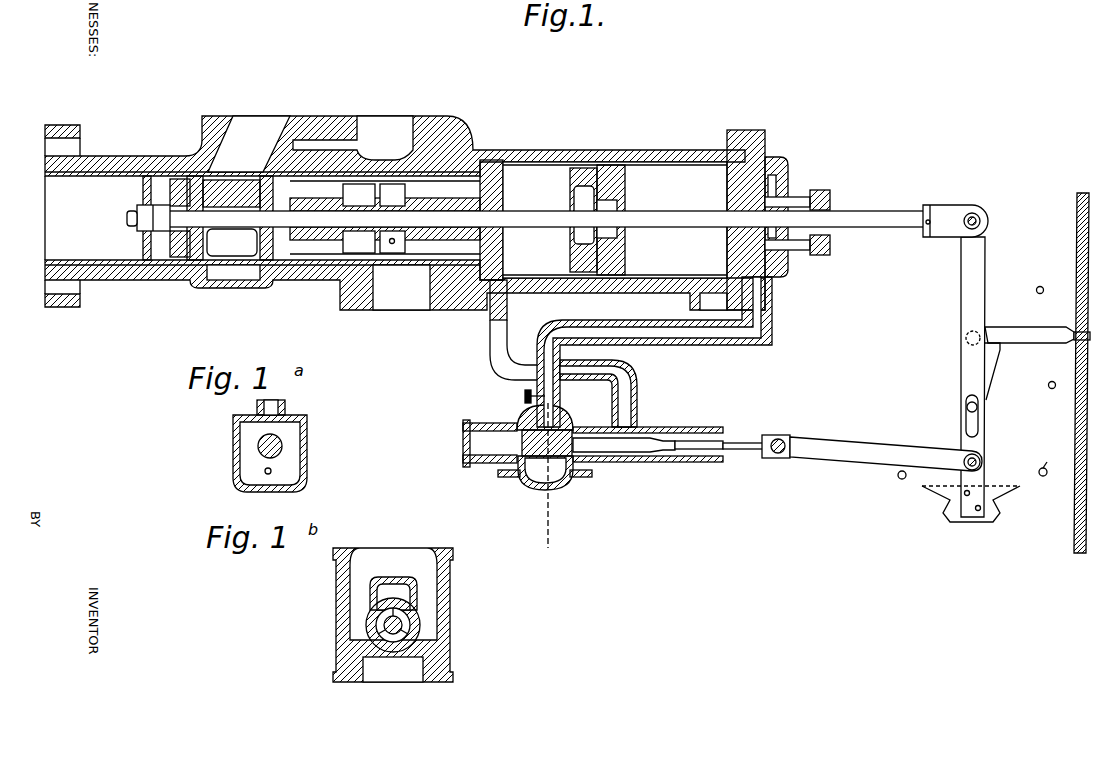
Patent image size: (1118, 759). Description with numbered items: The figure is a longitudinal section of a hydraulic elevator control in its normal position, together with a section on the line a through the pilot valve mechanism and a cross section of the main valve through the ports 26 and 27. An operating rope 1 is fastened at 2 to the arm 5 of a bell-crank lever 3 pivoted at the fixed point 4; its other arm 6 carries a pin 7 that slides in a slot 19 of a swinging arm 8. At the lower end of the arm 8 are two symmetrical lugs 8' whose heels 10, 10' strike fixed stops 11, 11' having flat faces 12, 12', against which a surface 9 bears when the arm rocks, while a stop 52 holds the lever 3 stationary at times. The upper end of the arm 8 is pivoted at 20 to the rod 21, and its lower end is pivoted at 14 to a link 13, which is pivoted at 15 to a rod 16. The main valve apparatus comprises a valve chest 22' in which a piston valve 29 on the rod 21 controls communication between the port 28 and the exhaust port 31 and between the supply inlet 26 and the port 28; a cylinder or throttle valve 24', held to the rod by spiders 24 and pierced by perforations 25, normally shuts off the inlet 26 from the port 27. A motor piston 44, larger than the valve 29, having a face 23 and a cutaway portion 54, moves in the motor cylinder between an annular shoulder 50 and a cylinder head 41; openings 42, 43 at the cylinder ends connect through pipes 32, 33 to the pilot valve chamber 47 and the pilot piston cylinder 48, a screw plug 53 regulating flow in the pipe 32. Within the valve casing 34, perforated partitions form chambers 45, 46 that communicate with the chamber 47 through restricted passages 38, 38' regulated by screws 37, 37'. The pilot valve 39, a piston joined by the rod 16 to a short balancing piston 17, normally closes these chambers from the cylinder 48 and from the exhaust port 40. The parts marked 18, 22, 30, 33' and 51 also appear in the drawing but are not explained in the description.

In FIG. 1, the rope or cable 1 is at (1086, 288).
In FIG. 1, the fastening point 2 is at (1090, 336).
In FIG. 1, the bell-crank lever 3 is at (995, 328).
In FIG. 1, the fixed pivot point 4 is at (966, 339).
In FIG. 1, the arm of bell-crank lever 5 is at (1060, 338).
In FIG. 1, the arm of bell-crank lever 6 is at (990, 368).
In FIG. 1, the pin 7 is at (977, 407).
In FIG. 1, the swinging arm 8 is at (986, 377).
In FIG. 1, the lug 8' is at (991, 497).
In FIG. 1, the surface 9 is at (1004, 487).
In FIG. 1, the heel 10 is at (983, 506).
In FIG. 1, the heel 10' is at (923, 526).
In FIG. 1, the fixed stop 11 is at (1046, 459).
In FIG. 1, the fixed stop 11' is at (877, 482).
In FIG. 1, the flat face 12 is at (1050, 489).
In FIG. 1, the flat face 12' is at (892, 495).
In FIG. 1, the link 13 is at (860, 450).
In FIG. 1, the pivot 14 is at (981, 462).
In FIG. 1, the pivot 15 is at (779, 436).
In FIG. 1, the rod 16 is at (605, 452).
In FIG. 1, the balancing piston 17 is at (662, 452).
In FIG. 1, the spindle 18 is at (703, 463).
In FIG. 1, the slot 19 is at (965, 424).
In FIG. 1, the pivot 20 is at (986, 221).
In FIG. 1, the rod or valve stem 21 is at (878, 216).
In FIG. 1B, the rod or valve stem 21 is at (406, 615).
In FIG. 1, the cylinder body 22 is at (395, 146).
In FIG. 1, the valve chest 22' is at (405, 287).
In FIG. 1B, the valve chest 22' is at (417, 615).
In FIG. 1, the right-hand face of motor piston 23 is at (572, 187).
In FIG. 1, the spokes or spider 24 is at (385, 217).
In FIG. 1B, the spokes or spider 24 is at (363, 625).
In FIG. 1, the cylinder or throttle valve 24' is at (422, 193).
In FIG. 1, the perforations 25 is at (396, 241).
In FIG. 1, the supply inlet 26 is at (400, 300).
In FIG. 1B, the supply inlet 26 is at (400, 592).
In FIG. 1, the port 27 is at (385, 122).
In FIG. 1B, the port 27 is at (392, 553).
In FIG. 1, the port 28 is at (268, 120).
In FIG. 1, the piston valve 29 is at (212, 197).
In FIG. 1, the chamber 30 is at (233, 161).
In FIG. 1, the discharge outlet or exhaust port 31 is at (55, 244).
In FIG. 1, the pipe 32 is at (690, 344).
In FIG. 1A, the pipe 32 is at (286, 408).
In FIG. 1, the pipe 33 is at (620, 393).
In FIG. 1A, the pipe opening 33' is at (329, 484).
In FIG. 1, the valve casing 34 is at (552, 490).
In FIG. 1A, the valve casing 34 is at (306, 451).
In FIG. 1, the screw 37 is at (590, 484).
In FIG. 1, the screw 37' is at (498, 487).
In FIG. 1A, the screw 37' is at (228, 483).
In FIG. 1, the restricted opening 38 is at (520, 498).
In FIG. 1, the restricted opening 38' is at (578, 500).
In FIG. 1, the pilot valve 39 is at (500, 460).
In FIG. 1A, the pilot valve 39 is at (240, 447).
In FIG. 1, the pilot valve exhaust port 40 is at (467, 450).
In FIG. 1, the cylinder head 41 is at (800, 192).
In FIG. 1, the opening 42 is at (745, 257).
In FIG. 1, the opening 43 is at (510, 290).
In FIG. 1, the motor piston 44 is at (615, 162).
In FIG. 1, the chamber 45 is at (522, 425).
In FIG. 1, the chamber 46 is at (562, 426).
In FIG. 1, the pilot valve chamber 47 is at (543, 490).
In FIG. 1, the pilot valve piston cylinder or casing 48 is at (666, 434).
In FIG. 1, the annular shoulder 50 is at (492, 162).
In FIG. 1, the hole 51 is at (1041, 287).
In FIG. 1, the stop 52 is at (1051, 389).
In FIG. 1, the screw plug 53 is at (524, 394).
In FIG. 1, the cutaway portion 54 is at (572, 266).
In FIG. 1, the section line a is at (545, 483).